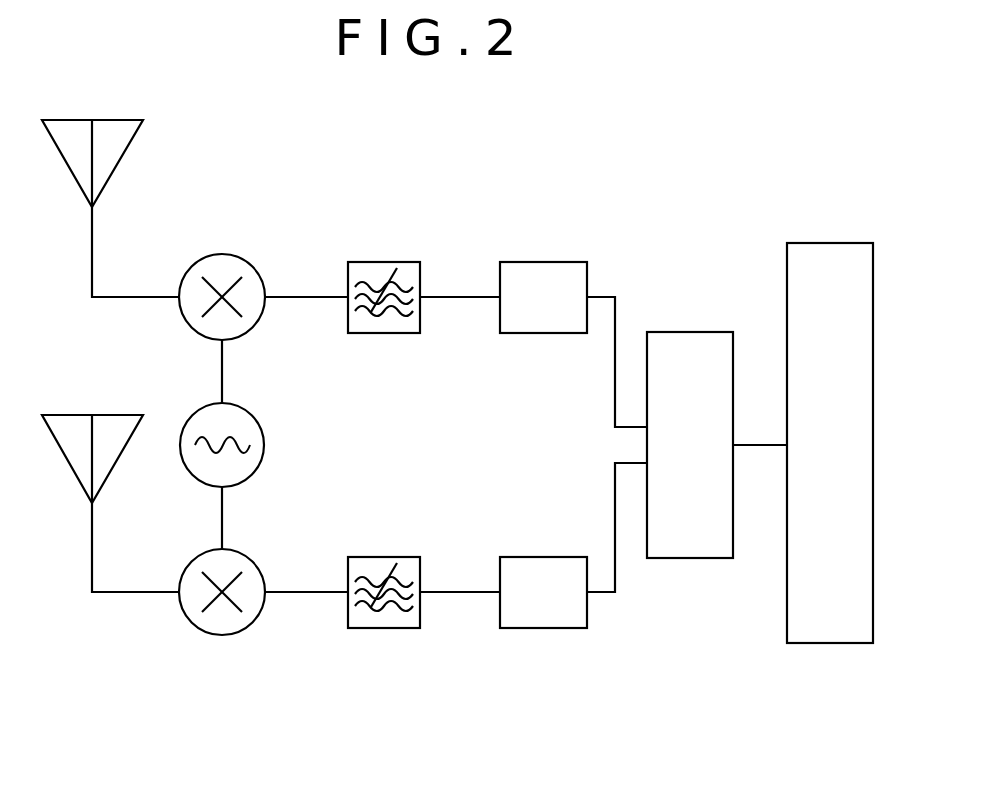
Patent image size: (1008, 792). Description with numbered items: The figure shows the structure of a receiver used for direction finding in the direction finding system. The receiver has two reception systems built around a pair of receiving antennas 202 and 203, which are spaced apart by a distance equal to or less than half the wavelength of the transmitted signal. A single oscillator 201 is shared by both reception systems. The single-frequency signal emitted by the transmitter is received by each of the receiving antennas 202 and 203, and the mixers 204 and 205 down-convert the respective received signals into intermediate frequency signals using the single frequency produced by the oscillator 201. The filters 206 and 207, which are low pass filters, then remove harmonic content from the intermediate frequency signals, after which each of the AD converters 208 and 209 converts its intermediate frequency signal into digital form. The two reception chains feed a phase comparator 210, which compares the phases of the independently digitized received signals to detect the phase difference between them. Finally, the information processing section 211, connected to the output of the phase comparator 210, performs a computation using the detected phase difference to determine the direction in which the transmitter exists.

The oscillator 201 is at (264, 445).
The receiving antenna 202 is at (92, 120).
The receiving antenna 203 is at (92, 415).
The mixer 204 is at (221, 254).
The mixer 205 is at (222, 635).
The filter 206 is at (387, 261).
The filter 207 is at (384, 631).
The AD converter 208 is at (543, 261).
The AD converter 209 is at (544, 631).
The phase comparator 210 is at (685, 331).
The information processing section 211 is at (830, 242).